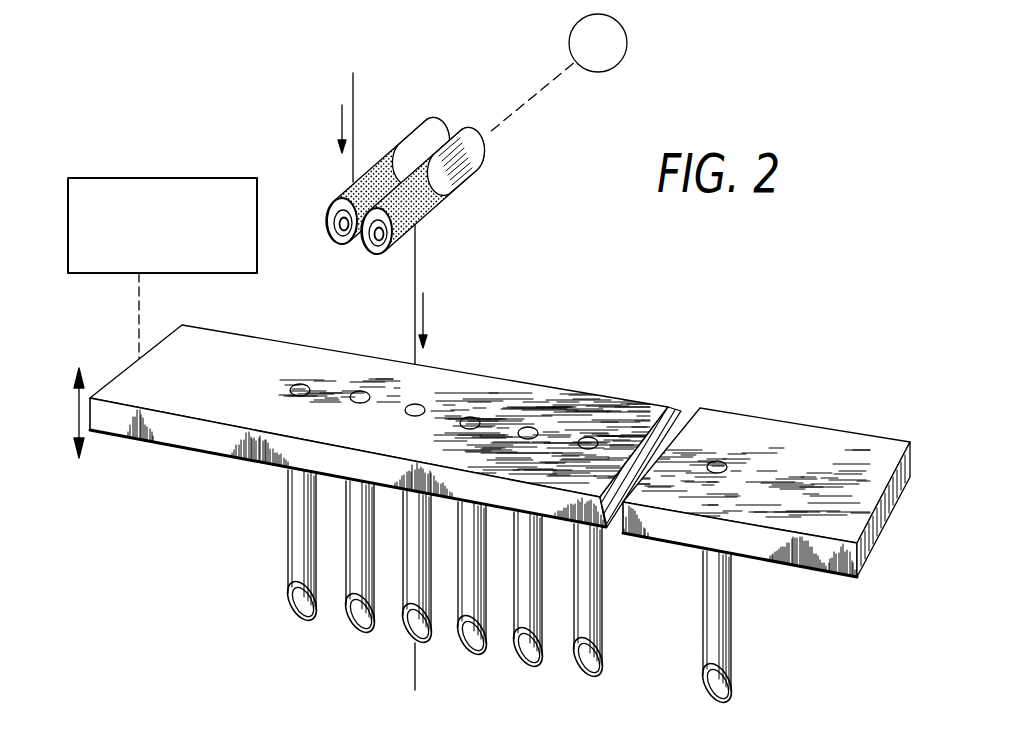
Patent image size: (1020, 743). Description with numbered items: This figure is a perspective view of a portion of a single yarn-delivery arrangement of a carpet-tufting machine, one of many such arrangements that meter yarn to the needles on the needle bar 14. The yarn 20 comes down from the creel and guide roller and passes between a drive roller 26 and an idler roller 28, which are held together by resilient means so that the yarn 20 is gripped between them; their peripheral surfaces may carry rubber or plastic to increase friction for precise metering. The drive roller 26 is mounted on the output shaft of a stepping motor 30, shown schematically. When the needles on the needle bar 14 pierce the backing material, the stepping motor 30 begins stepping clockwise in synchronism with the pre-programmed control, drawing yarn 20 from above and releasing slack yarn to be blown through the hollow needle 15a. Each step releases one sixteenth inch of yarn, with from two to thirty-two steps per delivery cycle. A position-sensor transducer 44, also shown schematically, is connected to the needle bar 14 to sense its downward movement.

The needle bar 14 is at (591, 391).
The hollow needle 15a is at (422, 404).
The yarn 20 is at (353, 131).
The drive roller 26 is at (440, 204).
The idler roller 28 is at (345, 191).
The stepping motor 30 is at (610, 68).
The position-sensor transducer 44 is at (183, 259).